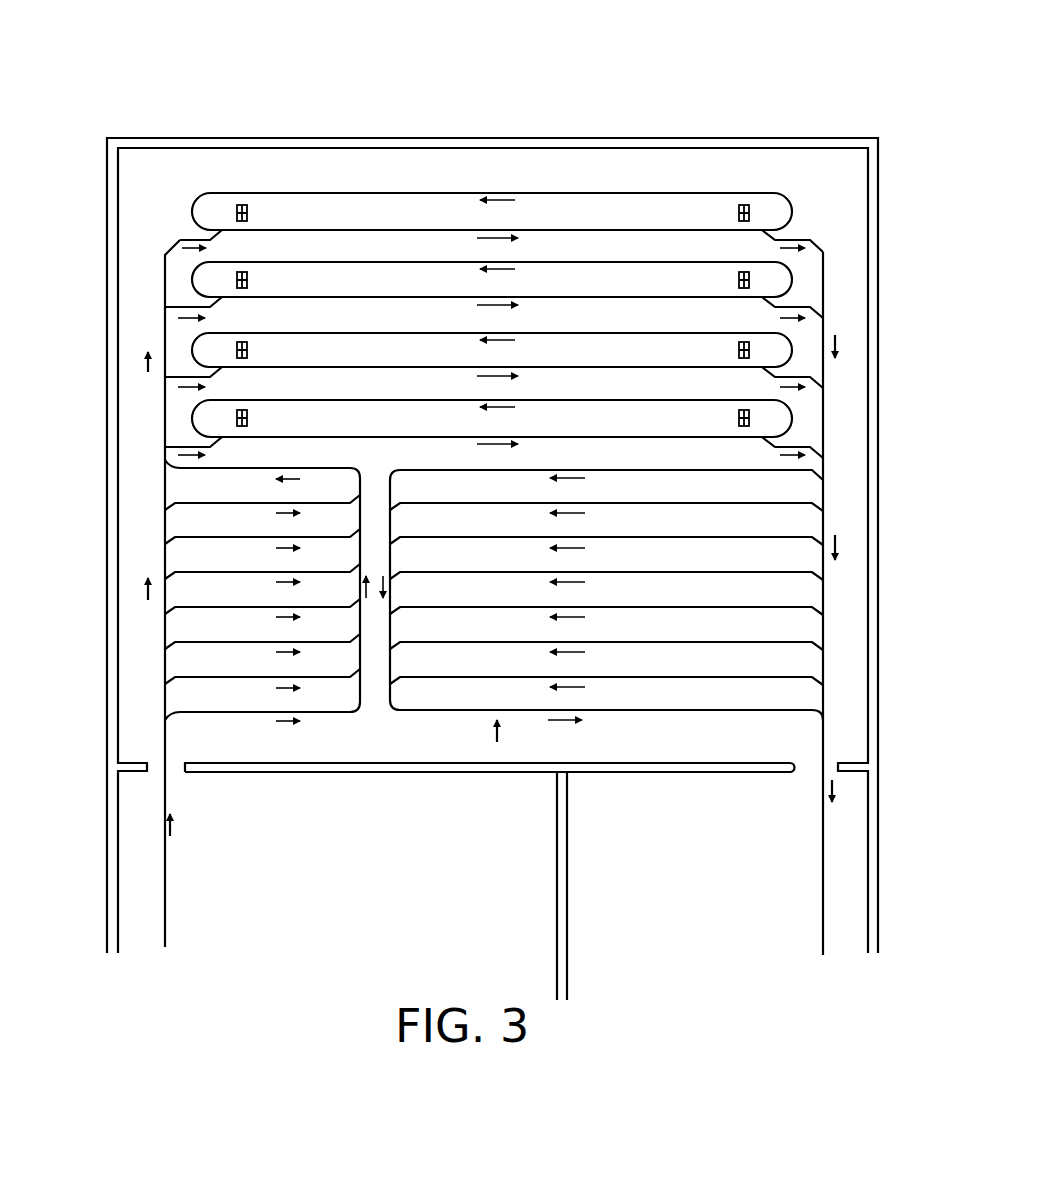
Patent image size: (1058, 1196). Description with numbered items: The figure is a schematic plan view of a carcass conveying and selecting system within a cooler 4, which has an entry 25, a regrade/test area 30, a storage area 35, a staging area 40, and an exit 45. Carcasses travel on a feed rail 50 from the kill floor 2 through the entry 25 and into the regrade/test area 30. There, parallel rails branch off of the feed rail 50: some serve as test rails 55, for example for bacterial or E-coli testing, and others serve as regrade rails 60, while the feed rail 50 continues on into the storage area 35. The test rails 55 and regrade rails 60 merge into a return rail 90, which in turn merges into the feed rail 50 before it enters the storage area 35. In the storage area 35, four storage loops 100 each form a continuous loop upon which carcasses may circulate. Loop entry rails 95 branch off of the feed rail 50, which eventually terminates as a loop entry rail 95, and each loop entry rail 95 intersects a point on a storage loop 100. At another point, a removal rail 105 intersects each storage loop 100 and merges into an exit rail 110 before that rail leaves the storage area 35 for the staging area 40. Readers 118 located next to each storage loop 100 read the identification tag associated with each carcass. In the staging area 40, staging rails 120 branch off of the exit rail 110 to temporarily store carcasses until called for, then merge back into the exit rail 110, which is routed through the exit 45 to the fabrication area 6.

The kill floor 2 is at (210, 905).
The cooler 4 is at (488, 64).
The fabrication area 6 is at (763, 909).
The entry 25 is at (187, 778).
The regrade/test area 30 is at (105, 583).
The storage area 35 is at (105, 351).
The staging area 40 is at (882, 576).
The exit 45 is at (800, 776).
The feed rail 50 is at (163, 284).
The test rails 55 is at (236, 680).
The regrade rails 60 is at (236, 510).
The return rail 90 is at (236, 478).
The loop entry rails 95 is at (182, 236).
The storage loop 100 is at (414, 198).
The removal rail 105 is at (803, 236).
The exit rail 110 is at (826, 276).
The readers 118 is at (250, 216).
The staging rails 120 is at (605, 465).